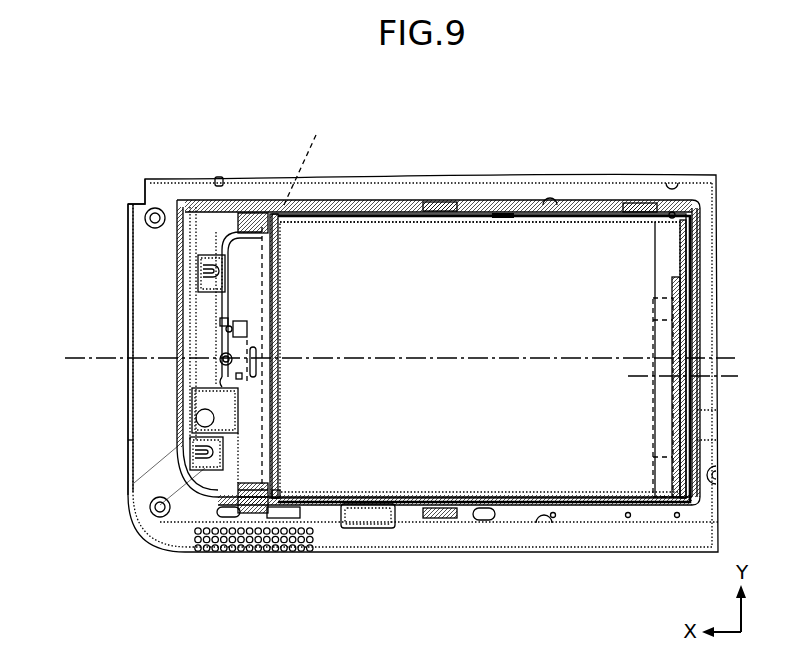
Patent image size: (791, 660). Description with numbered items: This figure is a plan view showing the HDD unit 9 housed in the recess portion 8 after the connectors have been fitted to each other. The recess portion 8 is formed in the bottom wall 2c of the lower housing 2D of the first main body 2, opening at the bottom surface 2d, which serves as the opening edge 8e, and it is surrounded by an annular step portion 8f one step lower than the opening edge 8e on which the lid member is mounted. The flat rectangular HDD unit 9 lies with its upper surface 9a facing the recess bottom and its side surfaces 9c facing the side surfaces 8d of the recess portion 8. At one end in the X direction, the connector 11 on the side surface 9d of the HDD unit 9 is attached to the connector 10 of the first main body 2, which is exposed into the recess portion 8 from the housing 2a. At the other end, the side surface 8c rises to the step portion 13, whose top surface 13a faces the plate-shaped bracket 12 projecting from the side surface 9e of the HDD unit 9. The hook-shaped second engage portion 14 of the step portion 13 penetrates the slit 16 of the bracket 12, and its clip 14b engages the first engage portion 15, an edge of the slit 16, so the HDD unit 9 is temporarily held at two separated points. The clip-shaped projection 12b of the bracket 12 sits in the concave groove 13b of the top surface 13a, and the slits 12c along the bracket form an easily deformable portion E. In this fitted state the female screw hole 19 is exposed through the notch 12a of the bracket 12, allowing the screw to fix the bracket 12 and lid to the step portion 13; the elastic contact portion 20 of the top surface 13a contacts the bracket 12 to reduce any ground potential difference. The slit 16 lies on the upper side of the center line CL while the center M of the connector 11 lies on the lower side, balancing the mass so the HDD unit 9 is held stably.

The first main body 2 is at (423, 363).
The lower housing 2D is at (125, 204).
The housing 2a is at (130, 349).
The bottom wall 2c is at (143, 462).
The bottom surface 2d is at (412, 190).
The recess portion 8 is at (250, 222).
The side surface 8c is at (248, 515).
The side surface 8d is at (494, 218).
The opening edge 8e is at (545, 205).
The annular step portion 8f is at (593, 215).
The HDD unit 9 is at (332, 507).
The upper surface 9a is at (468, 485).
The side surface 9c is at (465, 215).
The side surface 9d is at (672, 258).
The side surface 9e is at (272, 505).
The connector 10 is at (663, 470).
The connector 11 is at (673, 493).
The bracket 12 is at (225, 478).
The notch 12a is at (215, 361).
The clip-shaped projection 12b is at (233, 413).
The slits 12c is at (267, 258).
The step portion 13 is at (193, 323).
The top surface 13a is at (213, 223).
The concave groove 13b is at (213, 397).
The second engage portion 14 is at (216, 324).
The clip 14b is at (232, 338).
The first engage portion 15 is at (228, 329).
The slit 16 is at (221, 322).
The female screw hole 19 is at (226, 357).
The elastic contact portion 20 is at (212, 257).
The easily deformable portion E is at (310, 123).
The center line CL is at (735, 357).
The center of the connector M is at (733, 378).